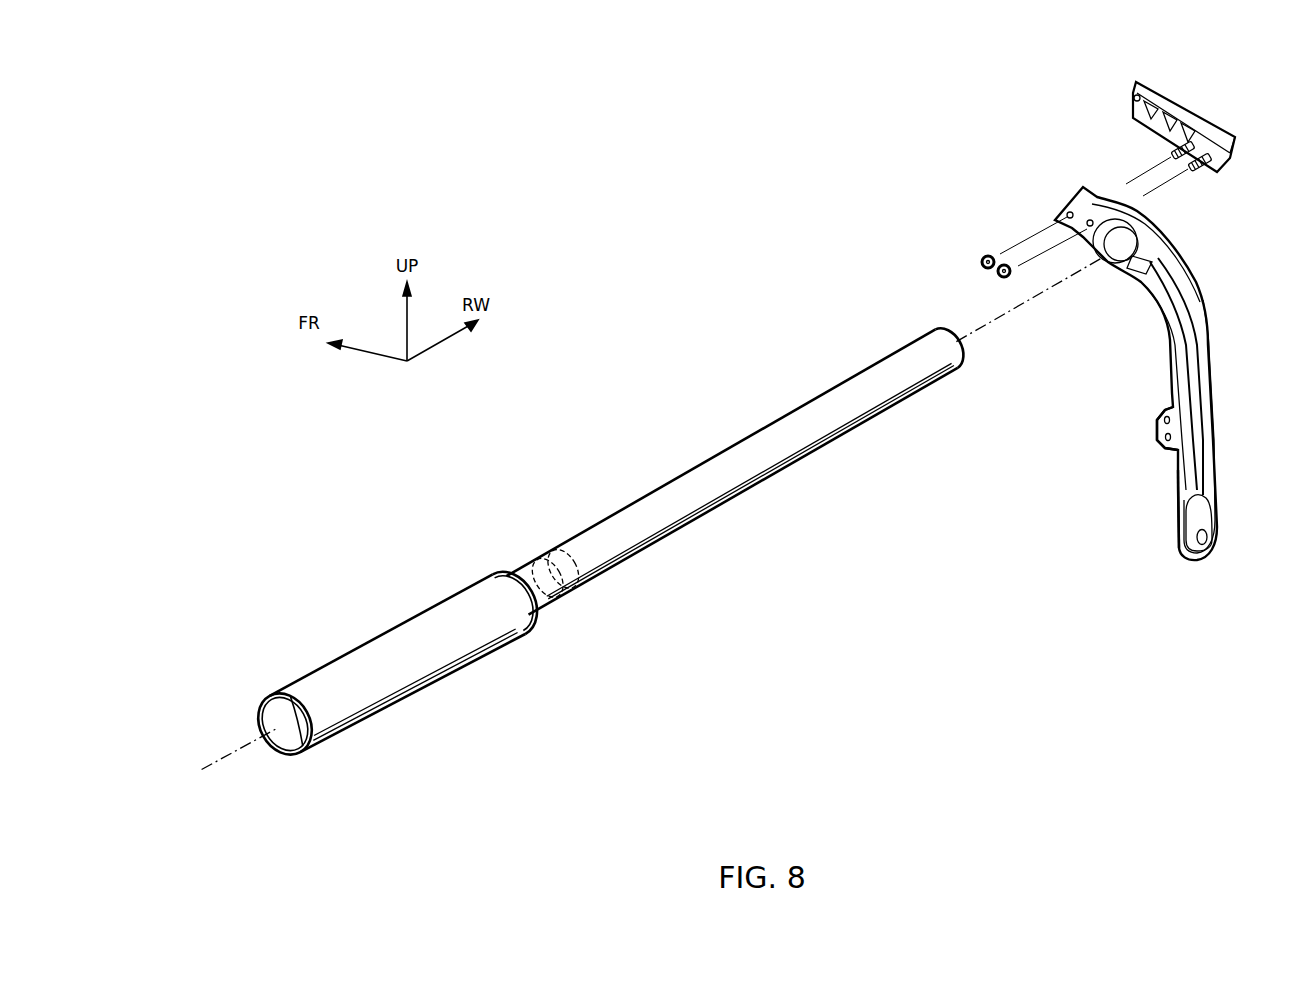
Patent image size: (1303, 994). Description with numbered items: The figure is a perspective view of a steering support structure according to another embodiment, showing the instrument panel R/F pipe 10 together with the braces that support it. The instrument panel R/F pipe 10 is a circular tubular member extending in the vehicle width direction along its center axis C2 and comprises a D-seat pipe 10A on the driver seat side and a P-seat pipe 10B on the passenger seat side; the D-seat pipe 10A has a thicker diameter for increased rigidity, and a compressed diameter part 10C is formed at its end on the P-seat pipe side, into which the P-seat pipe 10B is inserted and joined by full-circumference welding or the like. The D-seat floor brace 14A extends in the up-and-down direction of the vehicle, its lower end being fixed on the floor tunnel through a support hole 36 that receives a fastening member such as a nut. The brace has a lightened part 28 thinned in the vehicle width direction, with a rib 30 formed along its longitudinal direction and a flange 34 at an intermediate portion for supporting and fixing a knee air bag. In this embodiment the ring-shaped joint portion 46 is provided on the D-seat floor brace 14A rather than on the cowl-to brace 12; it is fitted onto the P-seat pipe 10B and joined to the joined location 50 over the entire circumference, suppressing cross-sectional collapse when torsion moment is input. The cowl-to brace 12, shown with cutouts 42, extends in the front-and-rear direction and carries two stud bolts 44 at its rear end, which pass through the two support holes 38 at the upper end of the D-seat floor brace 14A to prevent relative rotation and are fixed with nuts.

The instrument panel R/F pipe 10 is at (649, 520).
The D-seat pipe 10A is at (366, 650).
The P-seat pipe 10B is at (607, 522).
The compressed diameter part 10C is at (503, 576).
The cowl-to brace 12 is at (1153, 126).
The D-seat floor brace 14A is at (1173, 473).
The lightened part 28 is at (1135, 372).
The rib 30 is at (1165, 346).
The flange 34 is at (1162, 429).
The support hole 36 is at (1196, 539).
The support hole 38 is at (1092, 219).
The cutouts of bracket 42 is at (1126, 108).
The stud bolt 44 is at (1170, 153).
The joint portion 46 is at (1106, 251).
The joined location 50 is at (544, 546).
The center axis of pipe C2 is at (206, 781).